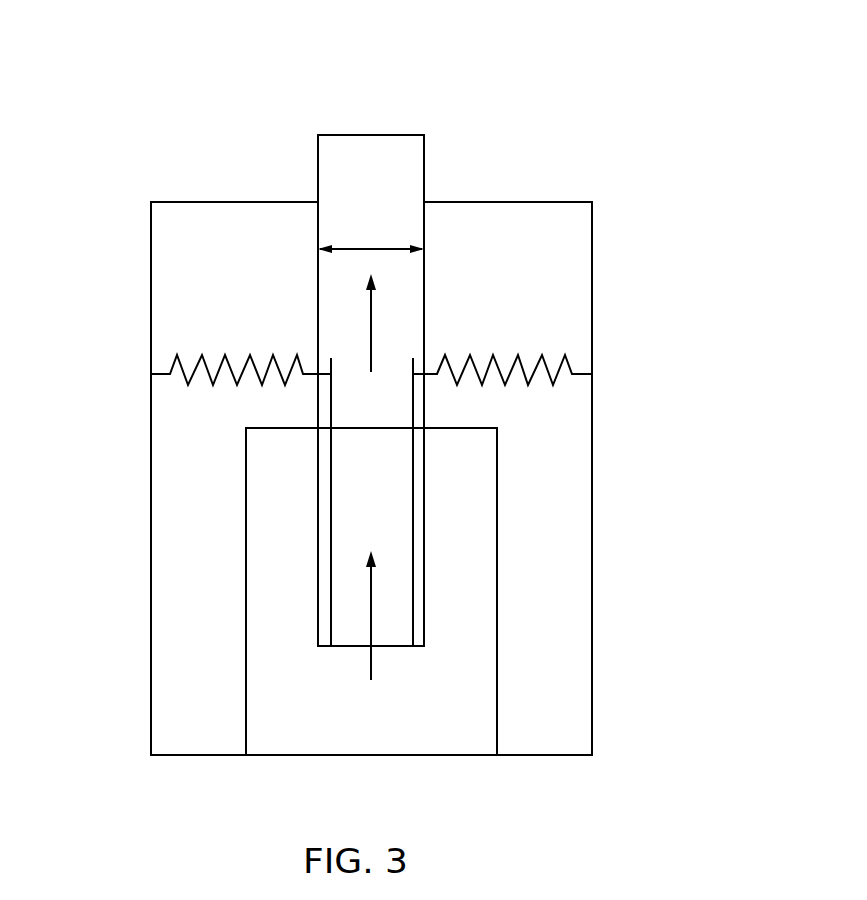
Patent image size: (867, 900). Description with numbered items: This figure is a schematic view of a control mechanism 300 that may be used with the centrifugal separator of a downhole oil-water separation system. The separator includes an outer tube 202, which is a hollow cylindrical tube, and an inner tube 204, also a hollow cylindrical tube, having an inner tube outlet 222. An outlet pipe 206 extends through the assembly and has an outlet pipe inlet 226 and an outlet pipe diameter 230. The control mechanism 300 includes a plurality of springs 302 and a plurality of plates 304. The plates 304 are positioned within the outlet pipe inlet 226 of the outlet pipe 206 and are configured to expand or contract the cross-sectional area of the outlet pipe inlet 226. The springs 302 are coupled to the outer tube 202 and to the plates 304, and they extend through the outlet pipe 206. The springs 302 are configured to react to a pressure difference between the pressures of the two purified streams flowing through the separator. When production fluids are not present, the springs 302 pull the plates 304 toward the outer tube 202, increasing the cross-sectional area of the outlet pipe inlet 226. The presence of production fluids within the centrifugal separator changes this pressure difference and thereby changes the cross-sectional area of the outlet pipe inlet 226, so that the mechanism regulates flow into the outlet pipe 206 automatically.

The control mechanism 300 is at (606, 67).
The outer tube 202 is at (148, 250).
The inner tube 204 is at (246, 650).
The outlet pipe 206 is at (318, 160).
The inner tube outlet 222 is at (260, 428).
The outlet pipe inlet 226 is at (388, 645).
The outlet pipe diameter 230 is at (385, 248).
The springs 302 is at (175, 359).
The plates 304 is at (331, 527).